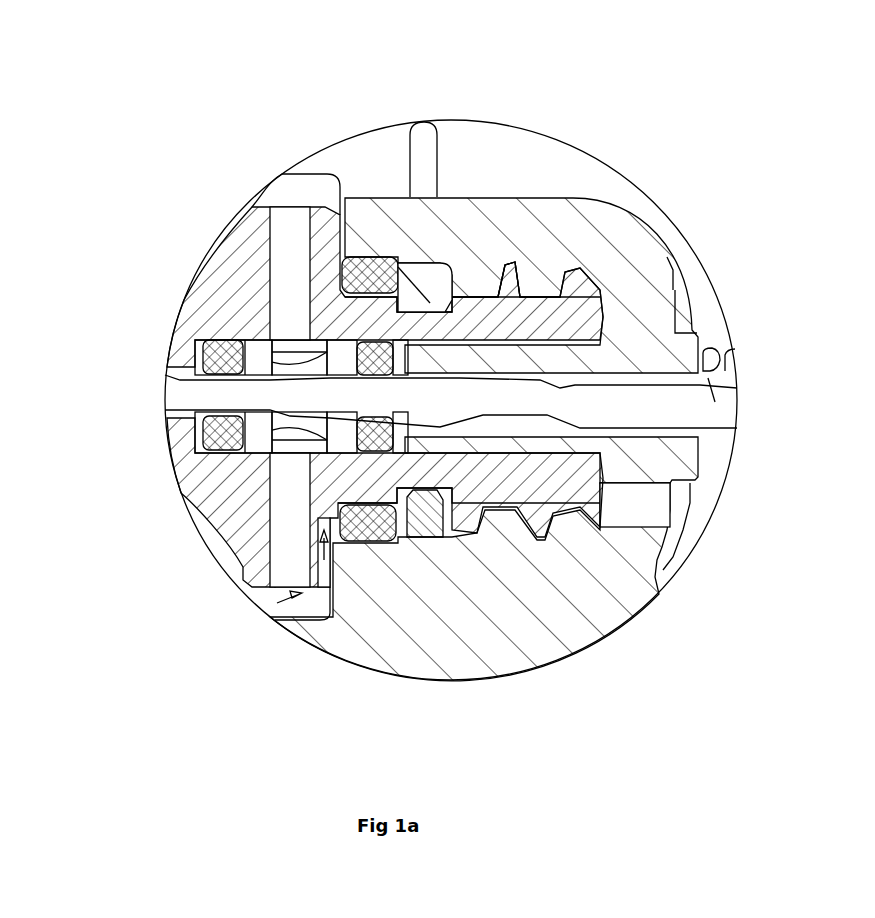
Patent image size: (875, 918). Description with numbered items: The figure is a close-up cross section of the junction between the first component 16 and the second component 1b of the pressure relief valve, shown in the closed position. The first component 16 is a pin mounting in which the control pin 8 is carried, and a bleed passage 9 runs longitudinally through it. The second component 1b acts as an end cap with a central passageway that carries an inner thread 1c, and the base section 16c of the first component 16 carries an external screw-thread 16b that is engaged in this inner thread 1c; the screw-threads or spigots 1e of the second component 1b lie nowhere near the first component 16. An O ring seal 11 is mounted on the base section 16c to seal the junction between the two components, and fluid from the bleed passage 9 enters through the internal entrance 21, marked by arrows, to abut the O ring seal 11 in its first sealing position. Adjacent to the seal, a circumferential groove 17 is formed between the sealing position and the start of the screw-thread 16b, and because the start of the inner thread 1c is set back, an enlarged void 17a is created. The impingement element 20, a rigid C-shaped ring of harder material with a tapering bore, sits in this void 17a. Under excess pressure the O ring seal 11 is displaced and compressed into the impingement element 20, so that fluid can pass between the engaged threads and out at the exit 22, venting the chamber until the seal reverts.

The second component 1b is at (502, 218).
The inner thread 1c is at (507, 517).
The screw-threads (spigots) 1e is at (640, 510).
The control pin 8 is at (178, 395).
The bleed passage 9 is at (290, 563).
The O ring seal 11 is at (377, 273).
The first component 16 is at (210, 485).
The external screw-thread 16b is at (503, 283).
The base section 16c is at (362, 298).
The circumferential groove 17 is at (410, 490).
The void 17a is at (342, 255).
The impingement element 20 is at (428, 535).
The entrance 21 is at (327, 572).
The exit 22 is at (650, 518).